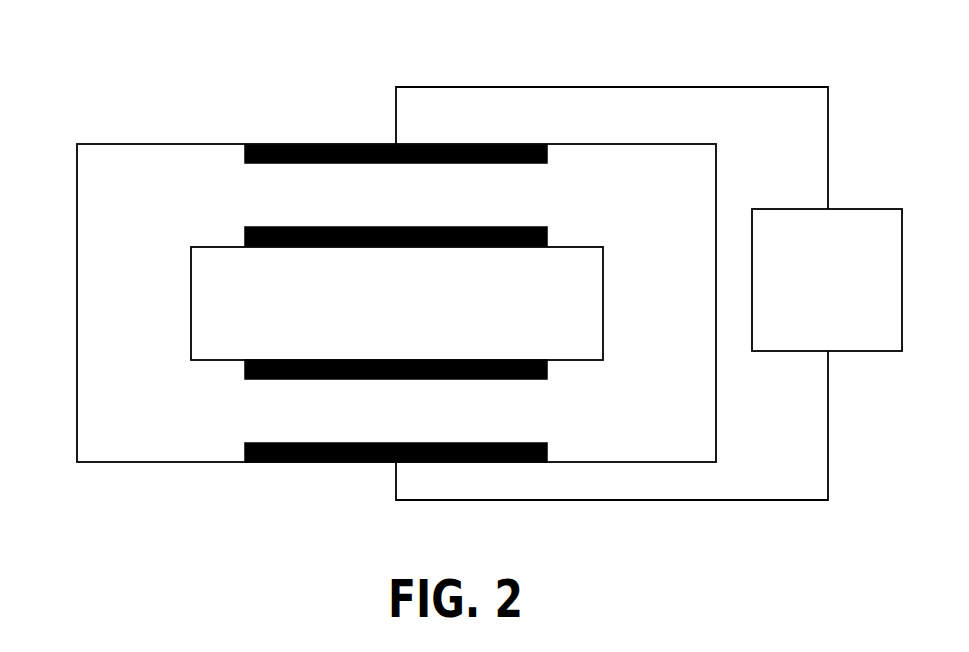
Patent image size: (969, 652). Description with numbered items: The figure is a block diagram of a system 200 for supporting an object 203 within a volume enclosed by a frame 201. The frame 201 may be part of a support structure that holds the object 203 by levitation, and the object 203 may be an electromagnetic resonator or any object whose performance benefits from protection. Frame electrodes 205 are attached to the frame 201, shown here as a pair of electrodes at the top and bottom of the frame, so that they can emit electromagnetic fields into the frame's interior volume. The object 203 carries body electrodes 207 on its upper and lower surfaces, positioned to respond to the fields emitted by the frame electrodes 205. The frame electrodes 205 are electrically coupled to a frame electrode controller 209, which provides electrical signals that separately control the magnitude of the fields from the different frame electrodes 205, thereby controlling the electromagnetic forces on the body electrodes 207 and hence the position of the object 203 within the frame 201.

The system 200 is at (166, 56).
The frame 201 is at (77, 277).
The object 203 is at (394, 314).
The frame electrodes 205 is at (348, 143).
The body electrodes 207 is at (348, 227).
The frame electrode controller 209 is at (809, 336).